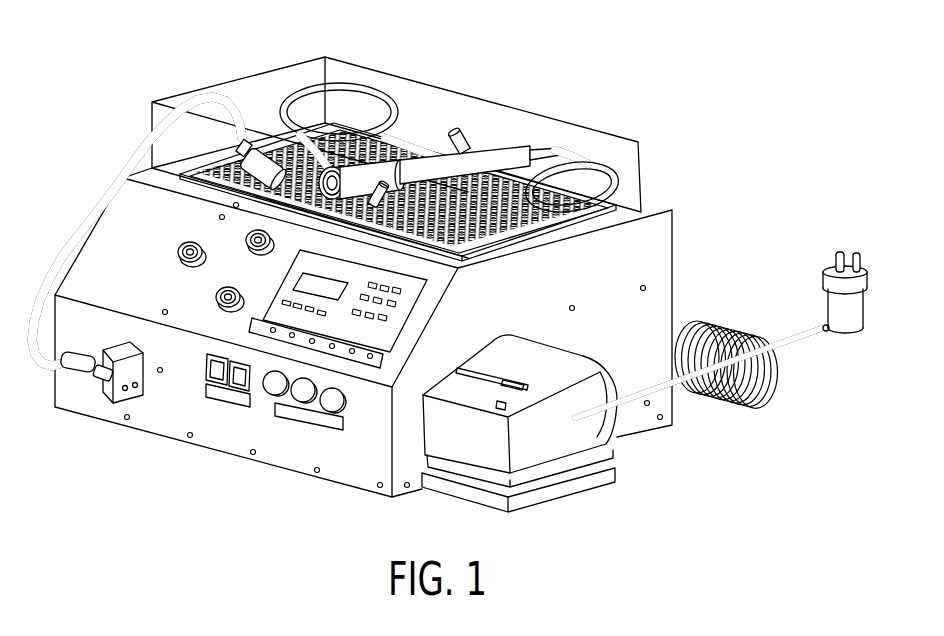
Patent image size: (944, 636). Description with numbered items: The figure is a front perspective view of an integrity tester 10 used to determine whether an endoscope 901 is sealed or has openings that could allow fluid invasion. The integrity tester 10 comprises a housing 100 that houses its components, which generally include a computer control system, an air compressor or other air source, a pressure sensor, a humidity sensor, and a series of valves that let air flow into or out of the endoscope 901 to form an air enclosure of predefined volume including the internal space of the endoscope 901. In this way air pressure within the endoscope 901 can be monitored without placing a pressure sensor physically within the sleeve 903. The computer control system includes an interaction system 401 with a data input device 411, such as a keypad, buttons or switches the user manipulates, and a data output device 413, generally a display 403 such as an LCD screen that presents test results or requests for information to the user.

The integrity tester 10 is at (664, 182).
The housing 100 is at (674, 268).
The interaction system 401 is at (392, 301).
The display 403 is at (313, 290).
The data input device 411 is at (403, 292).
The data output device 413 is at (322, 285).
The endoscope 901 is at (443, 163).
The sleeve 903 is at (606, 151).